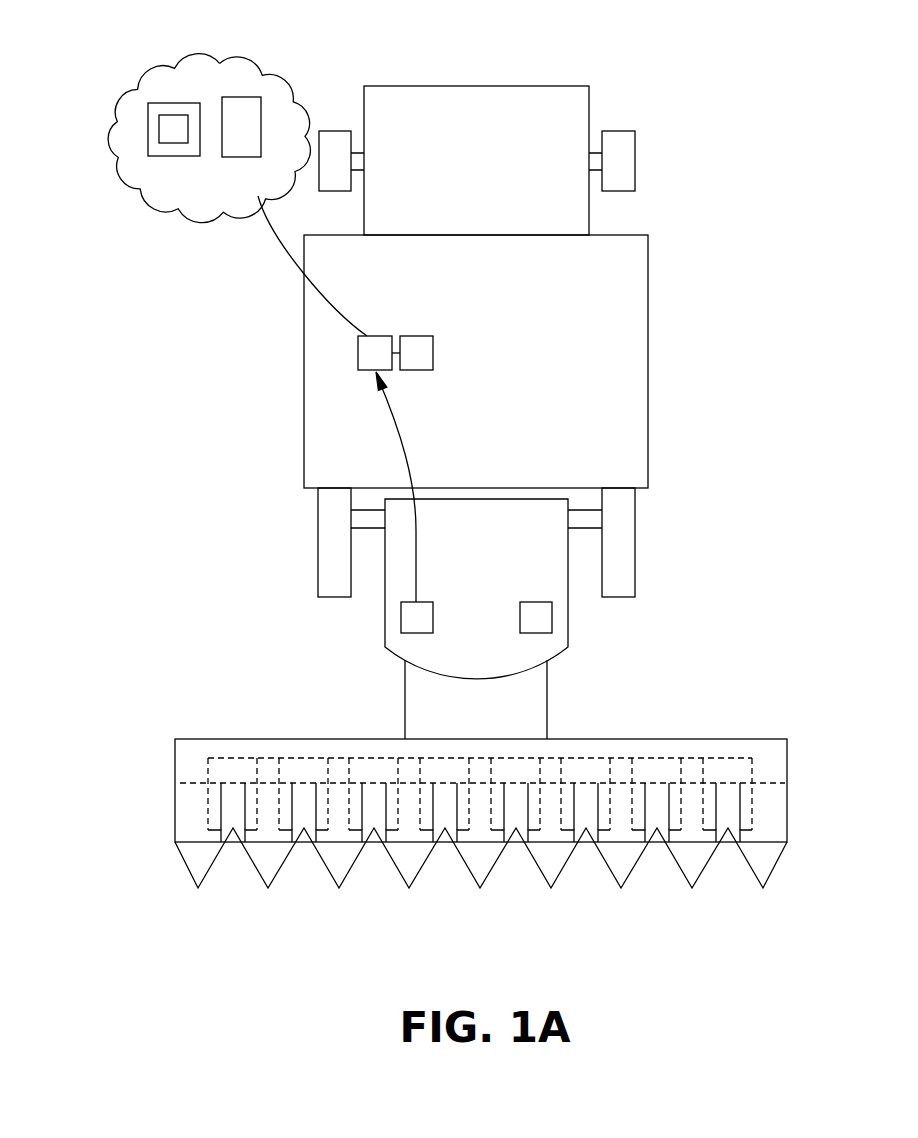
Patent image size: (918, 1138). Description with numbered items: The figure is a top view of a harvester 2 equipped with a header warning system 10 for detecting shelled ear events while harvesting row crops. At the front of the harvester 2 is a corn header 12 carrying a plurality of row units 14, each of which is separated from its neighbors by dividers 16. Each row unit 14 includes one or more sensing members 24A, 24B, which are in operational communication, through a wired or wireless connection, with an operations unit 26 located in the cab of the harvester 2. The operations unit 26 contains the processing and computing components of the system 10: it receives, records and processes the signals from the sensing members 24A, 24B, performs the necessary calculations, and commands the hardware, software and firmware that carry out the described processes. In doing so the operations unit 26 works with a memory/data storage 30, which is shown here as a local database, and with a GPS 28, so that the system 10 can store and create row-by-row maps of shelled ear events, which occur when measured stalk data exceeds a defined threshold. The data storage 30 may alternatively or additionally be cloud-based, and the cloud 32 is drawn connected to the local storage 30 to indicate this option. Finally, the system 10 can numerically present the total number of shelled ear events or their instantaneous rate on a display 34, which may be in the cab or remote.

The header warning system 10 is at (728, 280).
The harvester 2 is at (630, 235).
The cloud 32 is at (310, 97).
The data storage 30 is at (378, 336).
The GPS 28 is at (433, 353).
The display 34 is at (433, 617).
The operations unit 26 is at (520, 625).
The header 12 is at (775, 803).
The row units 14 is at (727, 797).
The dividers 16 is at (760, 946).
The sensing member 24A is at (715, 884).
The sensing member 24B is at (735, 925).